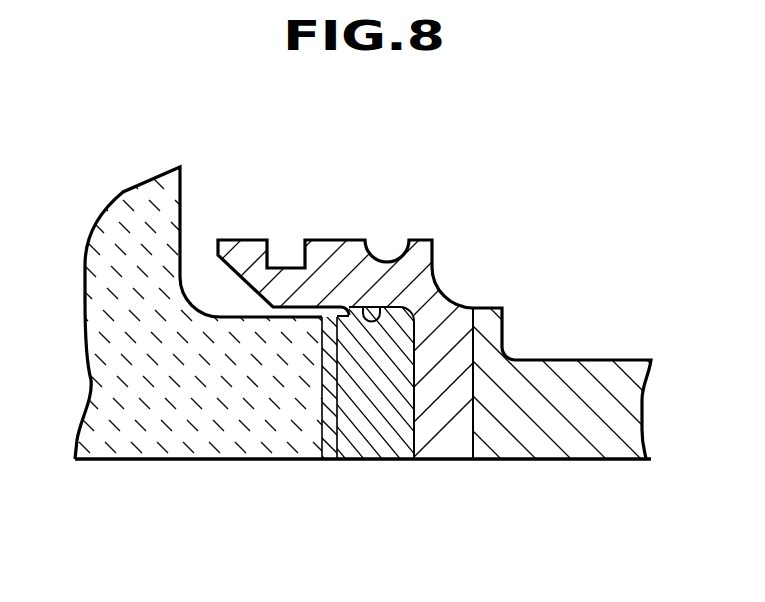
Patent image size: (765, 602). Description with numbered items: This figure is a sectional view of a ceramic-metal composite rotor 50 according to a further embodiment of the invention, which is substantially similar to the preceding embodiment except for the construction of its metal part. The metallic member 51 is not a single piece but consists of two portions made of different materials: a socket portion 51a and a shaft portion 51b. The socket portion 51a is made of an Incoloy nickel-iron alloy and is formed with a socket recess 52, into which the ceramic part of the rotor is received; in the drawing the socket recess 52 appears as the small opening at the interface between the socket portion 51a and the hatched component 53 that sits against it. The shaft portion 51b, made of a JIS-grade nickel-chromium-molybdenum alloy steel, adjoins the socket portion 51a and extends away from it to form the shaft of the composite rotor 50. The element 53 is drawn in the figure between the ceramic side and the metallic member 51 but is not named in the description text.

The ceramic-metal composite rotor 50 is at (416, 188).
The metallic member 51 is at (376, 400).
The socket portion 51a is at (442, 465).
The shaft portion 51b is at (408, 518).
The socket recess 52 is at (381, 306).
The intermediate member 53 is at (367, 465).